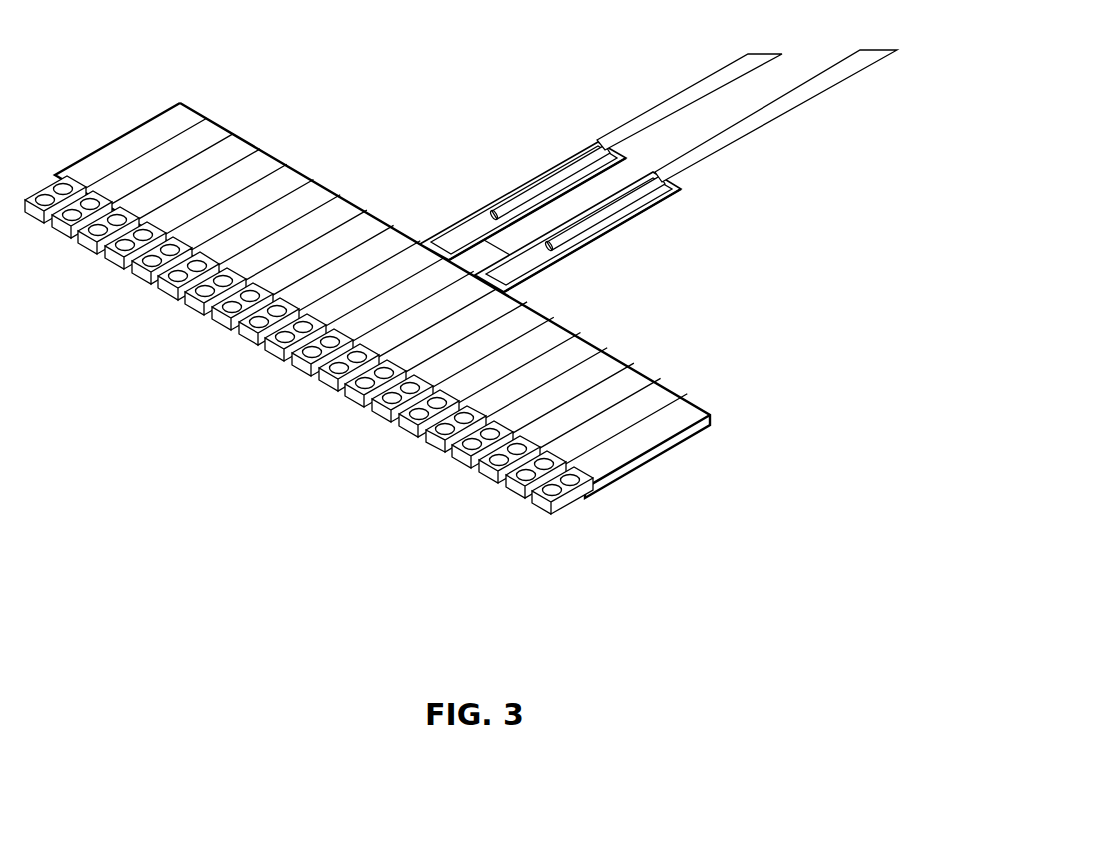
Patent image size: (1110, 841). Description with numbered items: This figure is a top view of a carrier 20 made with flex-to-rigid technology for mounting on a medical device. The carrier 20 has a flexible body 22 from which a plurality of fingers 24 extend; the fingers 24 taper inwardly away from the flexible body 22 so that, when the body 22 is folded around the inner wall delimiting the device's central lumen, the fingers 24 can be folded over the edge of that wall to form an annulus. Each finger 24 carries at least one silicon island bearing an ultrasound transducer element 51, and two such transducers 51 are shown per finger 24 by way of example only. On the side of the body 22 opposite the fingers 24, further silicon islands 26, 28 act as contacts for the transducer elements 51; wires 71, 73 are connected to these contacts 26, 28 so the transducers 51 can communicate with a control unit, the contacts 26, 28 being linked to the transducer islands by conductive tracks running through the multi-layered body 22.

The carrier 20 is at (461, 343).
The flexible body 22 is at (648, 430).
The fingers 24 is at (309, 361).
The ultrasound transducer element 51 is at (222, 330).
The silicon island contact 26 is at (607, 220).
The silicon island contact 28 is at (487, 217).
The wire 71 is at (723, 138).
The wire 73 is at (667, 117).